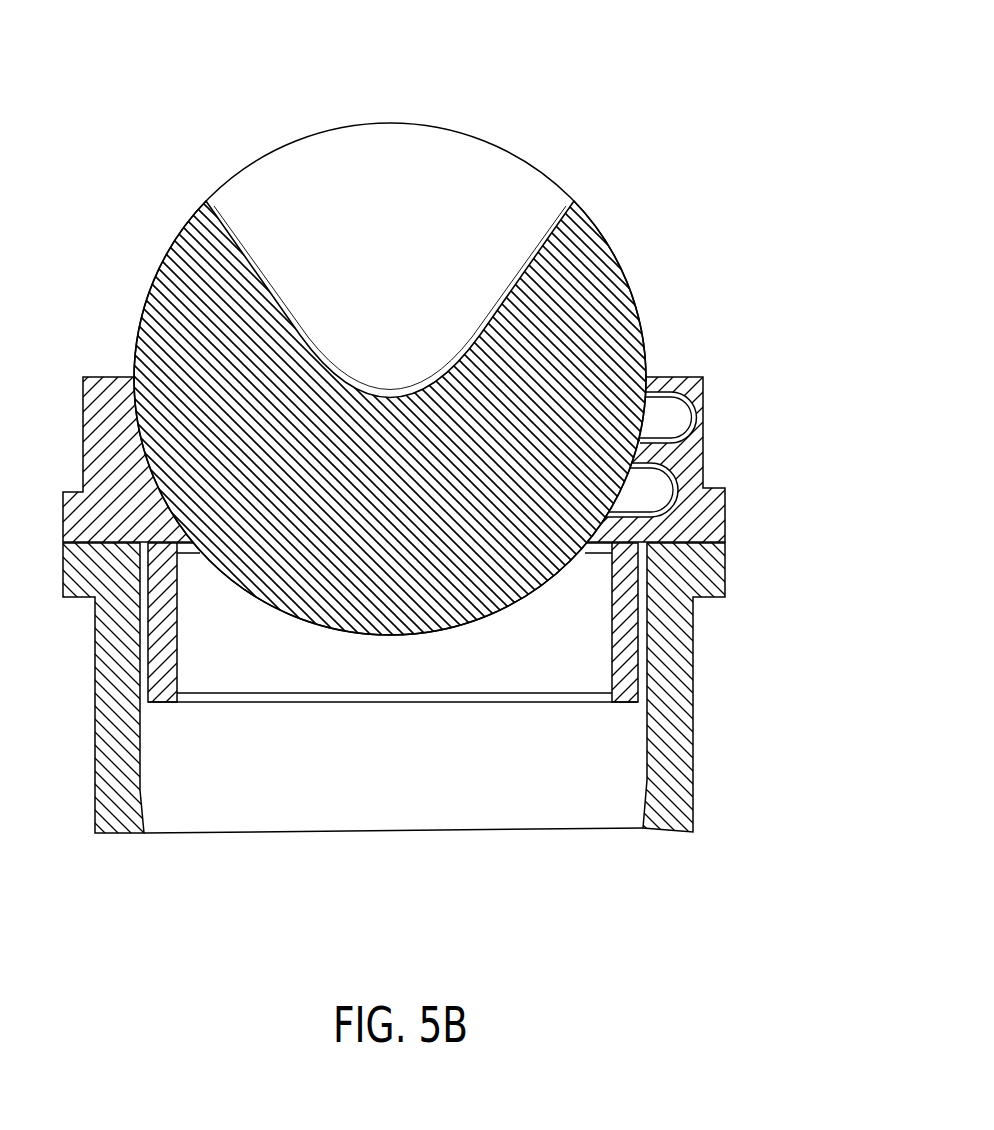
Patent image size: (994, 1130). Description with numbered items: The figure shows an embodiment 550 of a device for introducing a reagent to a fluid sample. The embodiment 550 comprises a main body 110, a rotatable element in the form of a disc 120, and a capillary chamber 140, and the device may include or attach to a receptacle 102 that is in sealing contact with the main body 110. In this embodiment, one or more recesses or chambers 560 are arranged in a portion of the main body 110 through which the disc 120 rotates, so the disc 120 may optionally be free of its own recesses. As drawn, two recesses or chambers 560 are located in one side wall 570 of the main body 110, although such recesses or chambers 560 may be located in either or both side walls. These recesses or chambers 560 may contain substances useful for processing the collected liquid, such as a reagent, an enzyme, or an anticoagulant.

The receptacle 102 is at (93, 697).
The main body 110 is at (92, 377).
The disc 120 is at (159, 268).
The capillary chamber 140 is at (385, 123).
The embodiment 550 is at (434, 429).
The recesses or chambers 560 is at (692, 433).
The side wall 570 is at (694, 516).